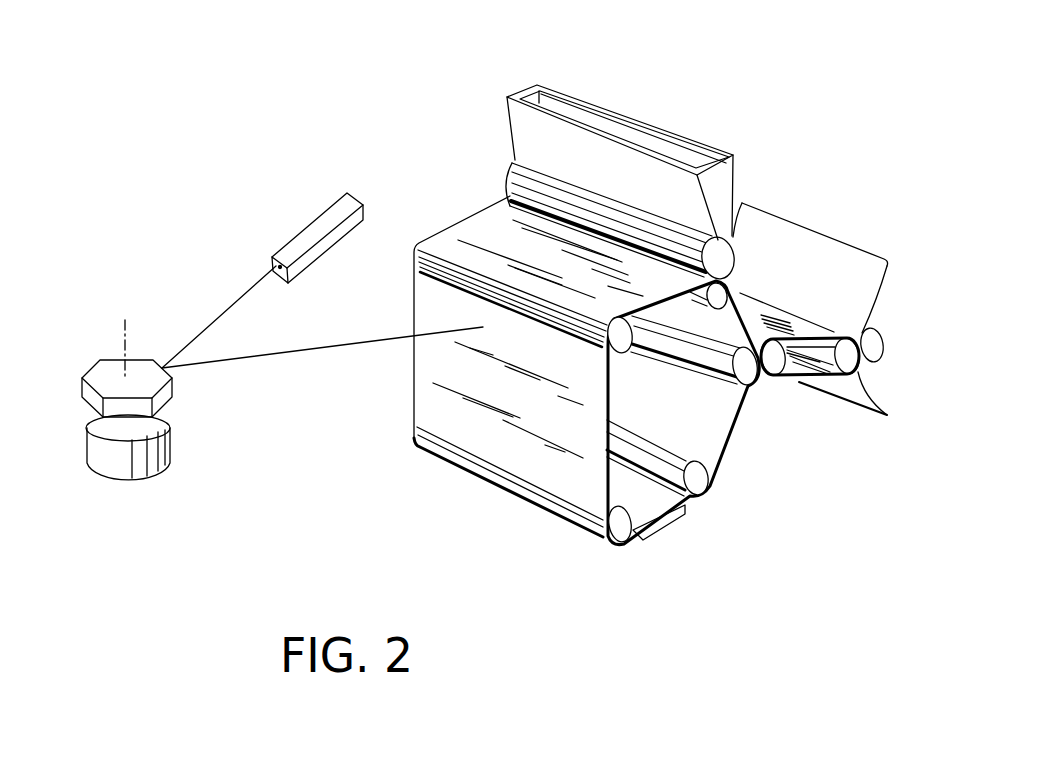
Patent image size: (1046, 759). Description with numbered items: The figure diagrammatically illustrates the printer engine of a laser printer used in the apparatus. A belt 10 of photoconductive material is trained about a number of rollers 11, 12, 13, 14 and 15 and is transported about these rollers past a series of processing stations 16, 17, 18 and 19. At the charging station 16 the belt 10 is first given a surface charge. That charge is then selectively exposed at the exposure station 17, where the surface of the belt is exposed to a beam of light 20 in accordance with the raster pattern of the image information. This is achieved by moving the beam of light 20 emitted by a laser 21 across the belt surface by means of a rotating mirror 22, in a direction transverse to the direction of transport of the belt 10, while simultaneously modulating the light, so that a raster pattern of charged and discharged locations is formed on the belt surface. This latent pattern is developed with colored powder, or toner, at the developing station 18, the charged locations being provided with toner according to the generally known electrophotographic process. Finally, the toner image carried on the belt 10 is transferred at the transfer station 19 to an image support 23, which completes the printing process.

The belt 10 is at (725, 440).
The roller 11 is at (705, 488).
The roller 12 is at (623, 544).
The roller 13 is at (620, 343).
The roller 14 is at (720, 297).
The roller 15 is at (749, 372).
The charging station 16 is at (666, 524).
The exposure station 17 is at (406, 367).
The developing station 18 is at (666, 145).
The transfer station 19 is at (823, 338).
The beam of light 20 is at (258, 362).
The laser 21 is at (313, 227).
The rotating mirror 22 is at (160, 360).
The image support 23 is at (877, 293).